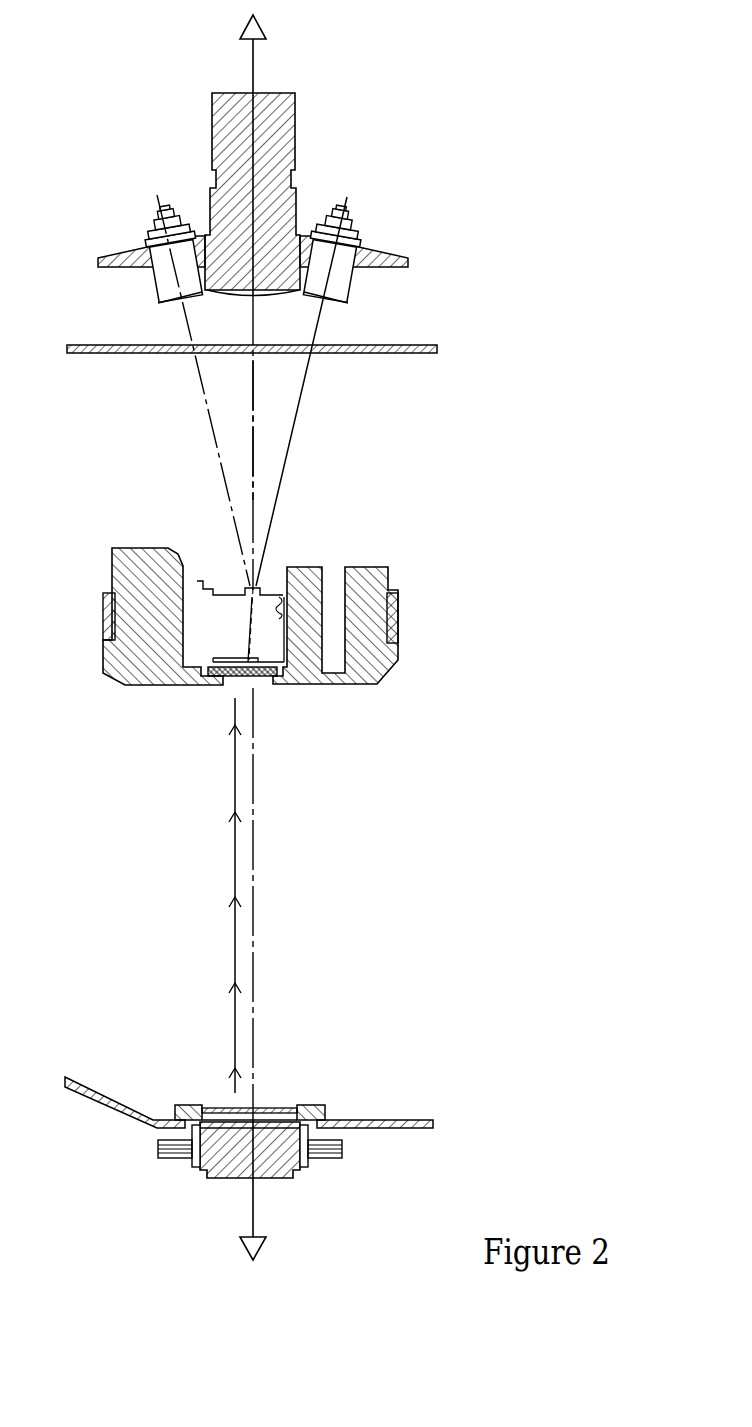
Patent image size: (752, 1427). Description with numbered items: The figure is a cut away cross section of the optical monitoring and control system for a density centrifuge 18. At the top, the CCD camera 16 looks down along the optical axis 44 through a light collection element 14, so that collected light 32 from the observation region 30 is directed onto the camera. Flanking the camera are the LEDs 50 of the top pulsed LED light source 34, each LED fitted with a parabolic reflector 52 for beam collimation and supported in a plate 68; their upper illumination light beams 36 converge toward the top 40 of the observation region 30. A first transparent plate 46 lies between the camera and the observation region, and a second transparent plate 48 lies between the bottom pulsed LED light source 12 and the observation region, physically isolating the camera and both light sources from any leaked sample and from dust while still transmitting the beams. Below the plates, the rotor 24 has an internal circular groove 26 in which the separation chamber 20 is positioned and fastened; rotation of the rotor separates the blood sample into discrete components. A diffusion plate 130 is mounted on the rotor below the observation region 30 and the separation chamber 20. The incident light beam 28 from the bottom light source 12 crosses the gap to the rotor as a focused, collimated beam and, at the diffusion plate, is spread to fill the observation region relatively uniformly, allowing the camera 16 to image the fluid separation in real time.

The light source 12 is at (270, 1175).
The light collection element 14 is at (267, 297).
The CCD camera 16 is at (295, 115).
The density centrifuge 18 is at (331, 621).
The separation chamber 20 is at (263, 638).
The rotor 24 is at (380, 663).
The circular groove 26 is at (223, 565).
The incident light beam 28 is at (233, 863).
The observation region 30 is at (283, 562).
The collected light 32 is at (253, 382).
The top pulsed LED light source 34 is at (167, 282).
The upper illumination light beam 36 is at (210, 418).
The top of observation region 40 is at (275, 558).
The optical axis 44 is at (254, 68).
The first transparent plate 46 is at (403, 355).
The second transparent plate 48 is at (210, 1105).
The LED 50 is at (153, 213).
The parabolic reflector 52 is at (170, 302).
The plate 68 is at (405, 263).
The diffusion plate 130 is at (253, 668).